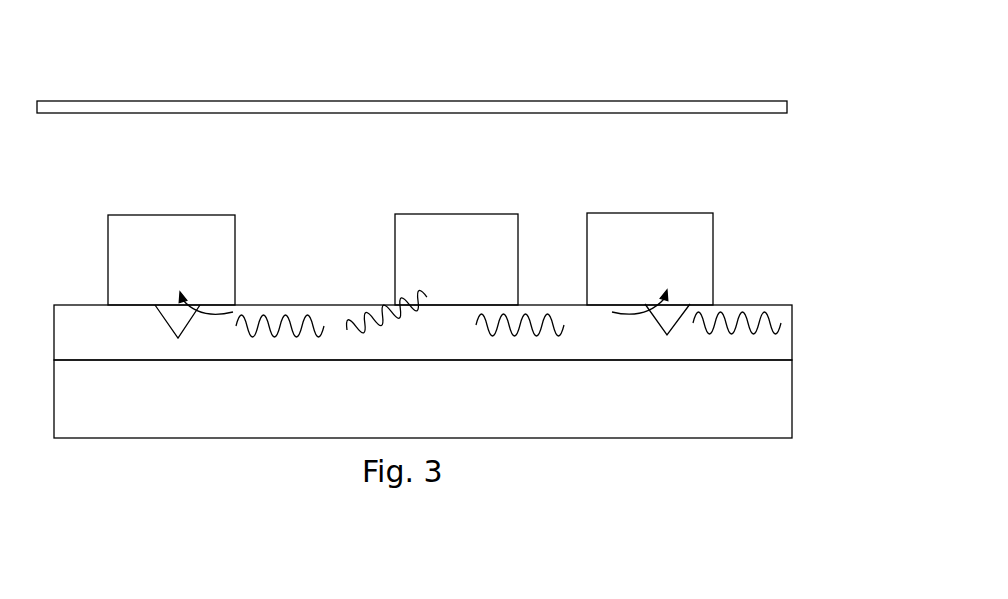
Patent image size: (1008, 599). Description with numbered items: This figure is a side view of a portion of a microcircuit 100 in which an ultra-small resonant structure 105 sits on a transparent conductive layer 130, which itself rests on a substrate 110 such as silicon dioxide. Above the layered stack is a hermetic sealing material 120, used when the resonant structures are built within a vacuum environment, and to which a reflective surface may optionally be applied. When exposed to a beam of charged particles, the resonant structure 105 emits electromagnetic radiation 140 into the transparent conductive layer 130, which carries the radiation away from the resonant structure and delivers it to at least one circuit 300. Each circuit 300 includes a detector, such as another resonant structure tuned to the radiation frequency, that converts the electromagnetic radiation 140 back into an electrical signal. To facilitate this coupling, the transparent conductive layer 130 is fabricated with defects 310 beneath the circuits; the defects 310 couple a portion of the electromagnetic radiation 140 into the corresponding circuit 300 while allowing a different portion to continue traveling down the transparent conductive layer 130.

The microcircuit 100 is at (735, 27).
The ultra-small resonant structure 105 is at (456, 259).
The substrate 110 is at (423, 399).
The hermetic sealing material 120 is at (275, 101).
The transparent conductive layer 130 is at (423, 332).
The electromagnetic radiation 140 is at (750, 315).
The circuit 300 is at (410, 263).
The defects 310 is at (167, 325).